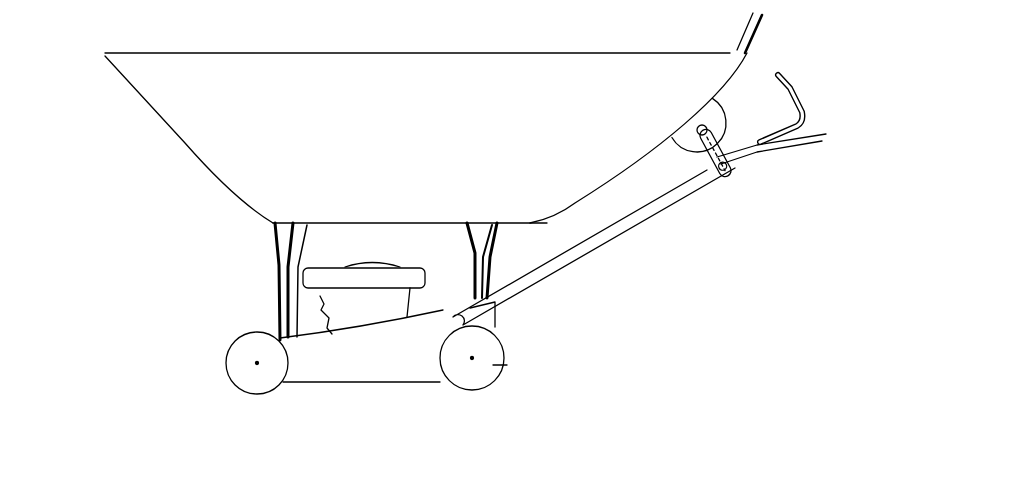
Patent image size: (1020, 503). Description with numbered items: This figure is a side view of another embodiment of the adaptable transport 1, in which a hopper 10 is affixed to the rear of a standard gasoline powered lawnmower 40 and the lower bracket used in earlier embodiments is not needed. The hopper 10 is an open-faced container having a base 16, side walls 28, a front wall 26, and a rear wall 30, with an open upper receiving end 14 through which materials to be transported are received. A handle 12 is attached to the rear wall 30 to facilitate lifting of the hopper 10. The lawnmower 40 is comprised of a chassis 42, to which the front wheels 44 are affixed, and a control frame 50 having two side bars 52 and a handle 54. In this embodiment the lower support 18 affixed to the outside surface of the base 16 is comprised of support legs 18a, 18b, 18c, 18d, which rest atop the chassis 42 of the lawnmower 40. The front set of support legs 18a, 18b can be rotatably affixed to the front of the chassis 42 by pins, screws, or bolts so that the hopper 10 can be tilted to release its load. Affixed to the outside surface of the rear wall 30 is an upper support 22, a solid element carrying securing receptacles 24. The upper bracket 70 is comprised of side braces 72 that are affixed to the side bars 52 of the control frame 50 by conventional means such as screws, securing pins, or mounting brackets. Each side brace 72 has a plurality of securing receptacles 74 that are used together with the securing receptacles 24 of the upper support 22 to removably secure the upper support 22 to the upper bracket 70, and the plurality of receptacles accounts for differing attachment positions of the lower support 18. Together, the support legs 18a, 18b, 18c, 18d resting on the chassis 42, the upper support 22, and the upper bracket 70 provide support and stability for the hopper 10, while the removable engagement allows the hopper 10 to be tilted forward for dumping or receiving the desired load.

The adaptable transport 1 is at (722, 275).
The hopper 10 is at (140, 150).
The handle 12 is at (762, 25).
The upper receiving end 14 is at (440, 53).
The base 16 is at (323, 222).
The lower support 18 is at (250, 237).
The support leg 18a is at (279, 286).
The support leg 18b is at (302, 250).
The support leg 18c is at (472, 255).
The support leg 18d is at (495, 243).
The upper support 22 is at (710, 112).
The securing receptacle 24 is at (707, 131).
The front wall 26 is at (200, 165).
The side wall 28 is at (449, 138).
The rear wall 30 is at (648, 153).
The lawnmower 40 is at (560, 338).
The chassis 42 is at (370, 363).
The front wheel 44 is at (248, 380).
The control frame 50 is at (692, 213).
The side bar 52 is at (635, 219).
The handle 54 is at (792, 93).
The upper bracket 70 is at (763, 163).
The side brace 72 is at (733, 172).
The securing receptacle 74 is at (783, 145).